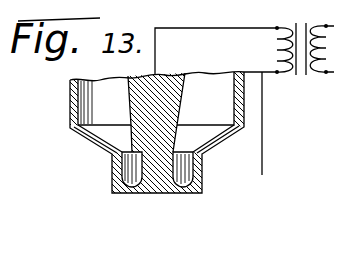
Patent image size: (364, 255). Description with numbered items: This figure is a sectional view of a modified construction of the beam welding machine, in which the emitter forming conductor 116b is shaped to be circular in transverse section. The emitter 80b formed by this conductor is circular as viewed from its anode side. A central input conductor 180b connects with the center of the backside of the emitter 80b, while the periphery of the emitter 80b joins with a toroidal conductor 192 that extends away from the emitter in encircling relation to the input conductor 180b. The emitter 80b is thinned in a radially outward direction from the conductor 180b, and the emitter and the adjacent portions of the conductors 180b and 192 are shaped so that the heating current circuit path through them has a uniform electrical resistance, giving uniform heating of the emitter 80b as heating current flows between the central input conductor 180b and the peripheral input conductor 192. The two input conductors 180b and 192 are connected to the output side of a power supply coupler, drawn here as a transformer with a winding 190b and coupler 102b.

The emitter 80b is at (174, 194).
The central input conductor 180b is at (170, 100).
The emitter forming conductor 116b is at (105, 147).
The toroidal conductor 192 is at (203, 170).
The primary winding 190b is at (272, 53).
The transformer 102b is at (300, 77).